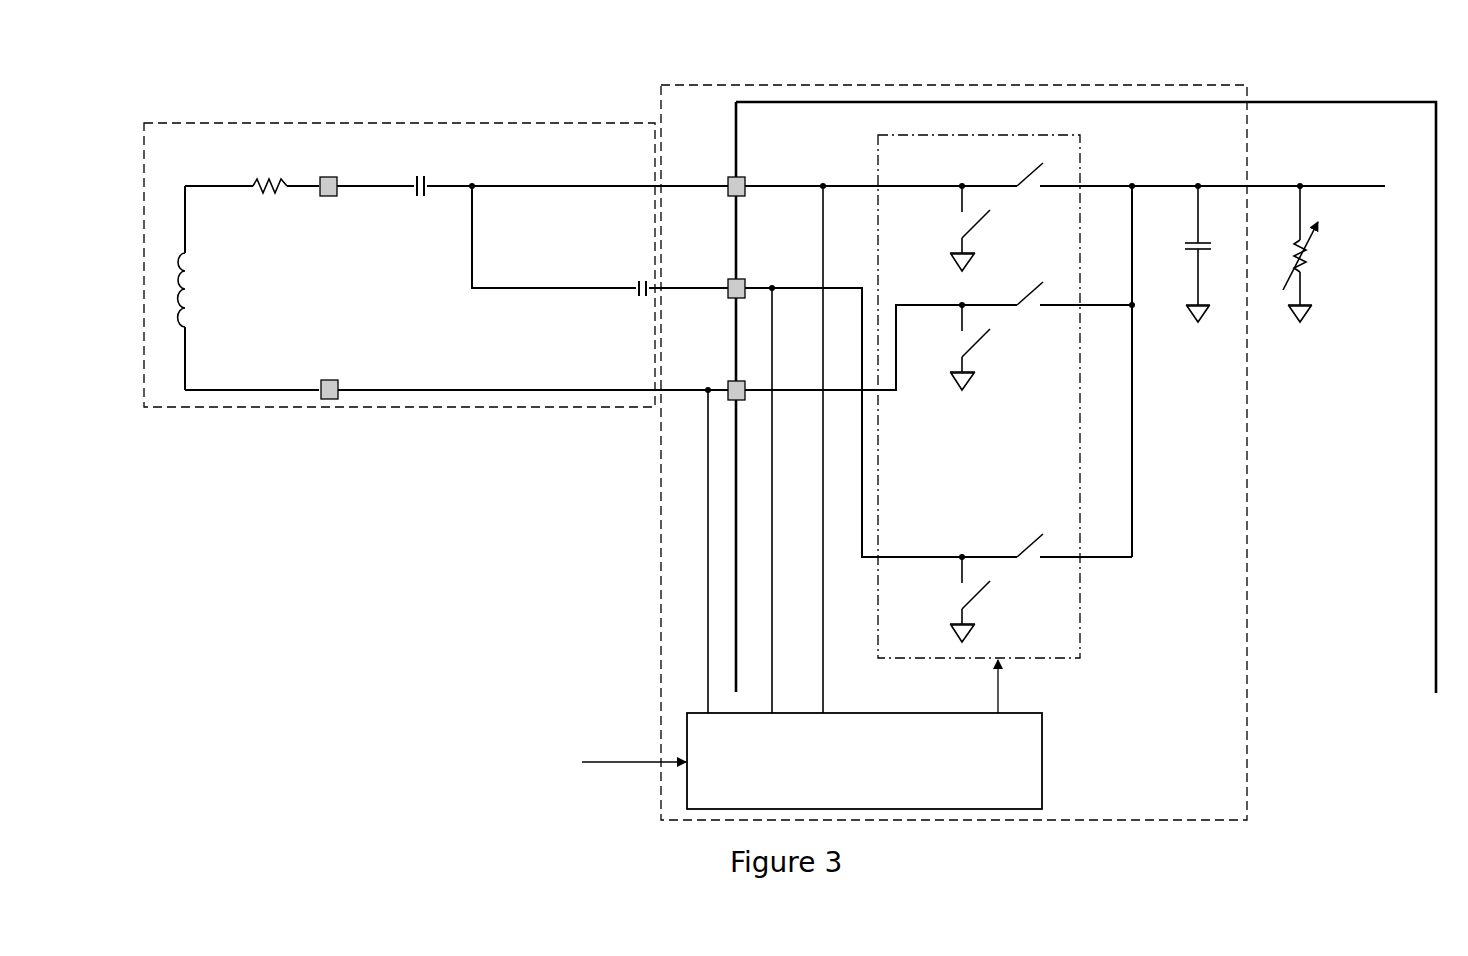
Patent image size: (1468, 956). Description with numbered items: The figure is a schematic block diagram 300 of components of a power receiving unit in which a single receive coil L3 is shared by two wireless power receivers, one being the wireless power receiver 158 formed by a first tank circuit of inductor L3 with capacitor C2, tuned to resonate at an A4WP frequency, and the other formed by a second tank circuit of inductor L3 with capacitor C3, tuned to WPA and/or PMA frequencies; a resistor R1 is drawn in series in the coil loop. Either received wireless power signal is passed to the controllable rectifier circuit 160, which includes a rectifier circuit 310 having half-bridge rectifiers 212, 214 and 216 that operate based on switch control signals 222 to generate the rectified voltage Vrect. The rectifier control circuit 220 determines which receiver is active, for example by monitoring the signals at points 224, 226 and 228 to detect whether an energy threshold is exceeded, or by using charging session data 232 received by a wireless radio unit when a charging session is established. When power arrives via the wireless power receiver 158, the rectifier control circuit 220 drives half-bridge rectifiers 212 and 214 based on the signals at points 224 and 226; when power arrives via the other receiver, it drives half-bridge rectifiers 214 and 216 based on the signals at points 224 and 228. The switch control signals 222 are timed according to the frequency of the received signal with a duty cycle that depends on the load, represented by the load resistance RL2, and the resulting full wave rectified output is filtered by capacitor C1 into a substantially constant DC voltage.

The schematic block diagram 300 is at (180, 62).
The wireless power receiver 158 is at (436, 265).
The resistor R1 is at (270, 175).
The receive coil L3 is at (197, 290).
The capacitor C2 is at (441, 170).
The capacitor C3 is at (639, 273).
The capacitor C1 is at (1187, 254).
The load RL2 is at (1320, 254).
The controllable rectifier circuit 160 is at (954, 452).
The rectifier circuit 310 is at (979, 396).
The half-bridge rectifier 212 is at (1008, 212).
The half-bridge rectifier 214 is at (1008, 333).
The half-bridge rectifier 216 is at (1018, 598).
The rectifier control circuit 220 is at (864, 761).
The switch control signals 222 is at (1000, 683).
The point 224 is at (776, 362).
The point 226 is at (821, 504).
The point 228 is at (706, 642).
The charging session data 232 is at (580, 760).